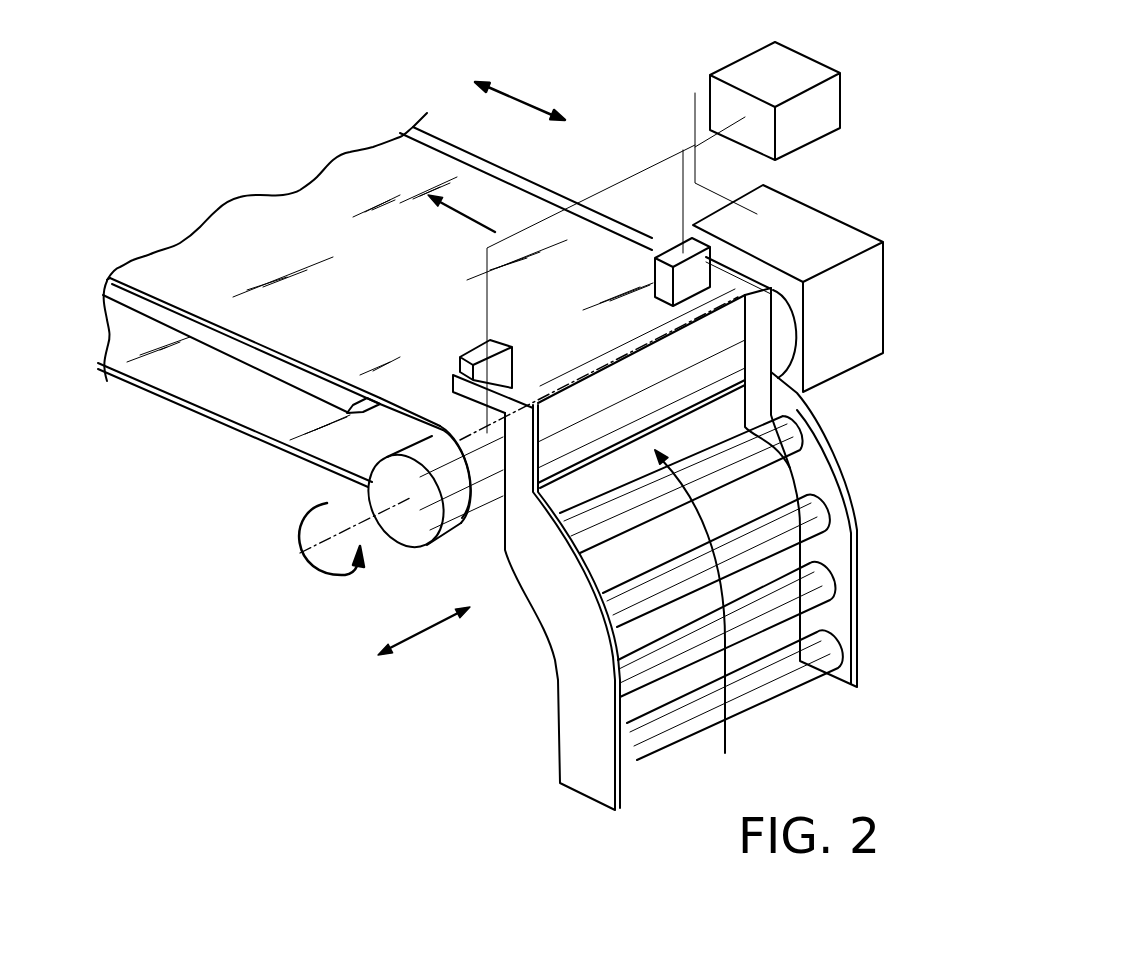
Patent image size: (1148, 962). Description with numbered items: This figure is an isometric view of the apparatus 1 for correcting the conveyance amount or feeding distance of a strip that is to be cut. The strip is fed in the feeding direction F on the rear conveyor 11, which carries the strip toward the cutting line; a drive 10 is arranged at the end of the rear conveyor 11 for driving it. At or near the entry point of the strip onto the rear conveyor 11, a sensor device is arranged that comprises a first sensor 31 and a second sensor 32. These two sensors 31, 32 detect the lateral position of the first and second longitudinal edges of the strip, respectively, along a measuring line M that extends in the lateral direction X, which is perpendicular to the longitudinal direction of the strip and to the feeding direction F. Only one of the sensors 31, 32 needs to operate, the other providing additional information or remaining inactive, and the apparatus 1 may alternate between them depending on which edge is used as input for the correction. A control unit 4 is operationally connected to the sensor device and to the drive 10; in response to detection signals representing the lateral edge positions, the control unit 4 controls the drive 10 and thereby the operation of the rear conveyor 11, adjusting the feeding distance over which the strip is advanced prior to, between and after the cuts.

The apparatus 1 is at (912, 148).
The control unit 4 is at (807, 63).
The drive 10 is at (853, 355).
The rear conveyor 11 is at (230, 418).
The first sensor 31 is at (467, 357).
The second sensor 32 is at (676, 245).
The measuring line M is at (630, 358).
The feeding direction F is at (461, 223).
The lateral direction X is at (424, 641).